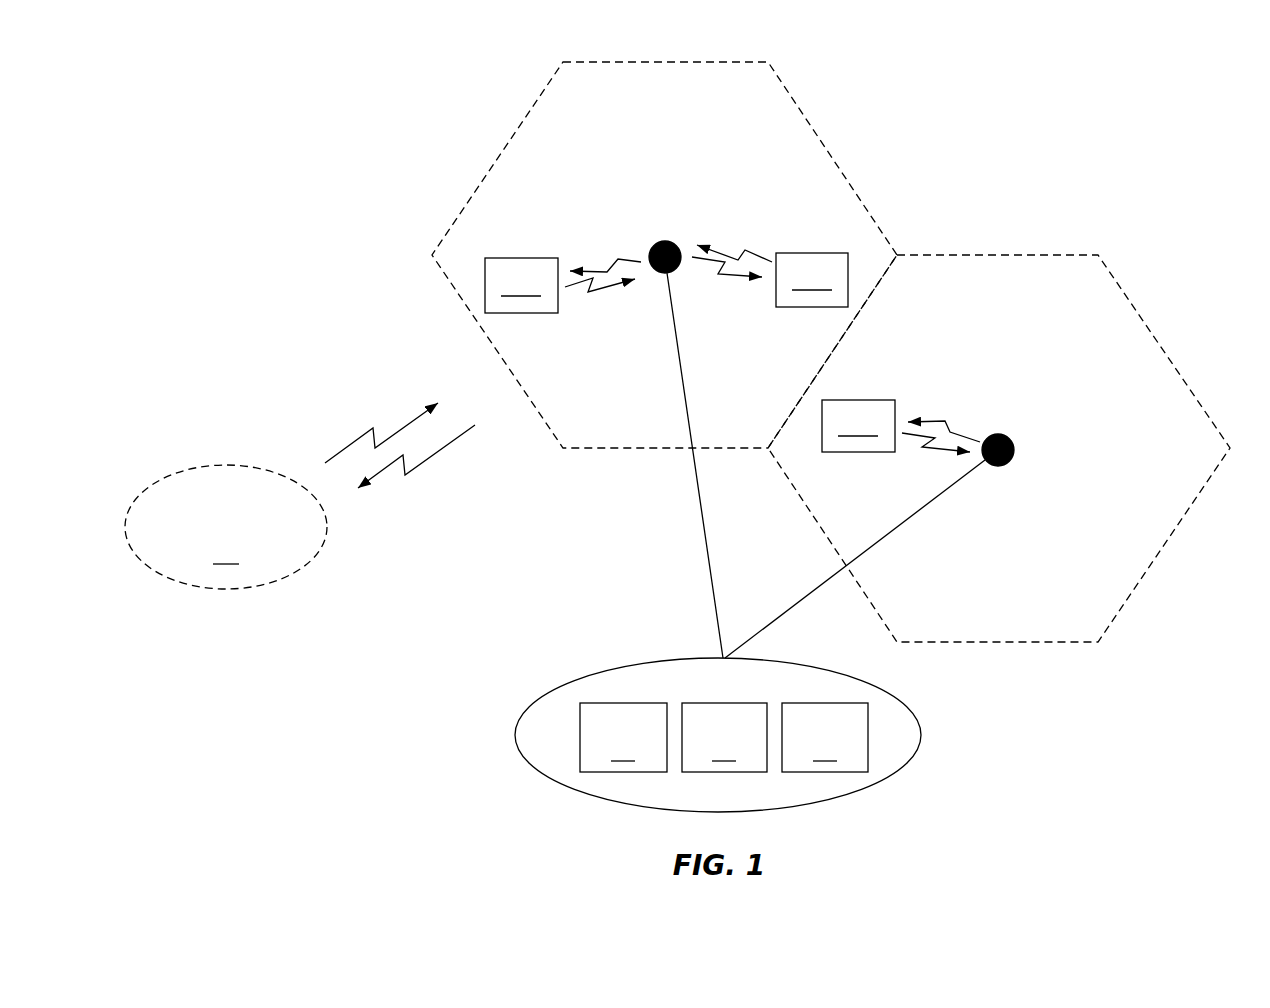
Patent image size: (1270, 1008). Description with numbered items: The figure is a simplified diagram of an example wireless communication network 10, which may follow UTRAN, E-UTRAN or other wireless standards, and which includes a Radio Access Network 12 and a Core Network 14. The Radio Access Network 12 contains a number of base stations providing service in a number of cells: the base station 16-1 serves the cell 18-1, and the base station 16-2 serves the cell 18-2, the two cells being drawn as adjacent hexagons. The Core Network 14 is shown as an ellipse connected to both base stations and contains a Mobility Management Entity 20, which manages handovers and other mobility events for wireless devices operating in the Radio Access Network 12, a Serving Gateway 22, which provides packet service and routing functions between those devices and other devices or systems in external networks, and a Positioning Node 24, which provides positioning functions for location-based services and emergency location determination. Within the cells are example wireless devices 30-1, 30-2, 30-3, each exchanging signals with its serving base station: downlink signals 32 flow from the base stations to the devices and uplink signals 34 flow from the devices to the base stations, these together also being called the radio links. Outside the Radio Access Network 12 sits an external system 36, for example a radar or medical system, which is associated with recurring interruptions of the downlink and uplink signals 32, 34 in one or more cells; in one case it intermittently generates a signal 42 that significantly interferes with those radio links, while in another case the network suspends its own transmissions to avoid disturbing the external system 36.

The wireless communication network 10 is at (1072, 168).
The Radio Access Network 12 is at (619, 485).
The Core Network 14 is at (560, 688).
The base station 16-1 is at (1010, 438).
The base station 16-2 is at (656, 243).
The cell 18-1 is at (1155, 338).
The cell 18-2 is at (832, 152).
The Mobility Management Entity 20 is at (623, 737).
The Serving Gateway 22 is at (724, 737).
The Positioning Node 24 is at (825, 737).
The wireless device 30-1 is at (858, 426).
The wireless device 30-2 is at (812, 280).
The wireless device 30-3 is at (521, 285).
The downlink signals 32 is at (608, 262).
The uplink signals 34 is at (595, 290).
The external system 36 is at (226, 527).
The signal 42 is at (381, 431).